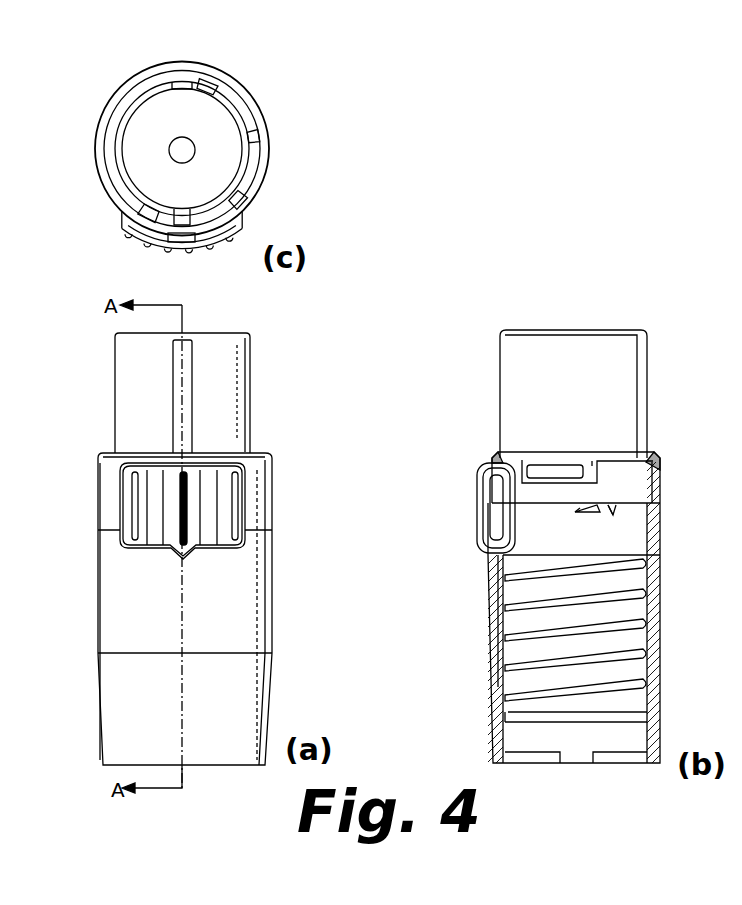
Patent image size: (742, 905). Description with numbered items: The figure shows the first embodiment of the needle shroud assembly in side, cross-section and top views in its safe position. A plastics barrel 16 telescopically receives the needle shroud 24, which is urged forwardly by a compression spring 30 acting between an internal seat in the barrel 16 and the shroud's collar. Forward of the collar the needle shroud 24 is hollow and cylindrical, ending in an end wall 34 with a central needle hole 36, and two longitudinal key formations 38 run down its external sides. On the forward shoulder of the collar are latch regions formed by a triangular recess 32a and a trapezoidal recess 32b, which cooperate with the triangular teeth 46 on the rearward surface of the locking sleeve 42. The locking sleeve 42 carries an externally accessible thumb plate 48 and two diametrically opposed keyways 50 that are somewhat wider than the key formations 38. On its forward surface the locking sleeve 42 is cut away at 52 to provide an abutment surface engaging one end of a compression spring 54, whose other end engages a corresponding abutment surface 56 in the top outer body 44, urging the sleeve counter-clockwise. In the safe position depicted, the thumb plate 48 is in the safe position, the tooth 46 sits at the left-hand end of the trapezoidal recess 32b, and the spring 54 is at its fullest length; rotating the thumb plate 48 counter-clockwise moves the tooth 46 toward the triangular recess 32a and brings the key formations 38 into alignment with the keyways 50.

The barrel 16 is at (252, 608).
The needle shroud 24 is at (235, 395).
The compression spring 30 is at (590, 625).
The triangular recess 32a is at (613, 505).
The trapezoidal recess 32b is at (593, 513).
The end wall 34 is at (217, 173).
The central needle hole 36 is at (190, 150).
The key formations 38 is at (178, 84).
The locking sleeve 42 is at (637, 468).
The top outer body 44 is at (658, 496).
The triangular teeth 46 is at (575, 510).
The thumb plate 48 is at (162, 247).
The keyways 50 is at (217, 86).
The cut away 52 is at (583, 457).
The compression spring 54 is at (249, 172).
The abutment surface 56 is at (260, 136).